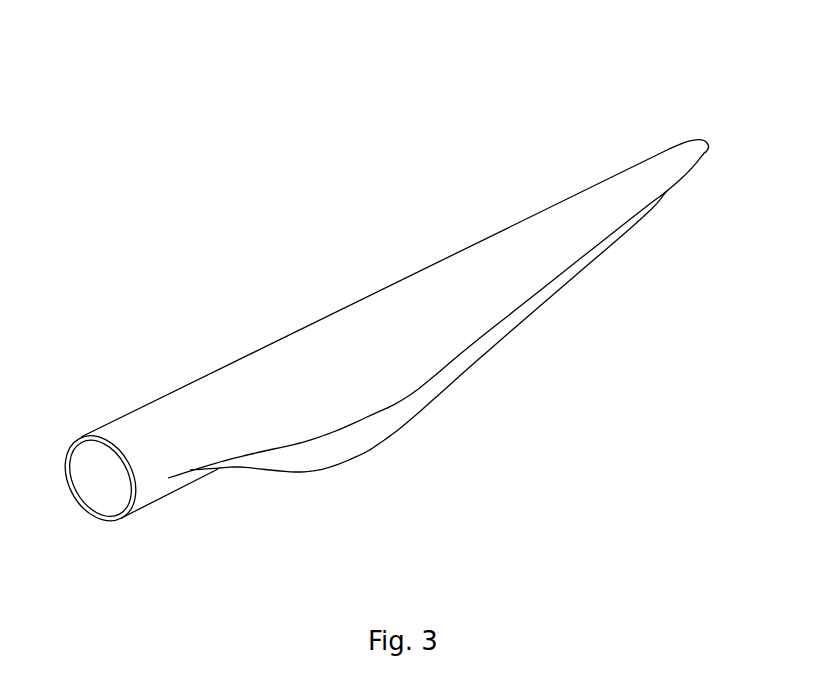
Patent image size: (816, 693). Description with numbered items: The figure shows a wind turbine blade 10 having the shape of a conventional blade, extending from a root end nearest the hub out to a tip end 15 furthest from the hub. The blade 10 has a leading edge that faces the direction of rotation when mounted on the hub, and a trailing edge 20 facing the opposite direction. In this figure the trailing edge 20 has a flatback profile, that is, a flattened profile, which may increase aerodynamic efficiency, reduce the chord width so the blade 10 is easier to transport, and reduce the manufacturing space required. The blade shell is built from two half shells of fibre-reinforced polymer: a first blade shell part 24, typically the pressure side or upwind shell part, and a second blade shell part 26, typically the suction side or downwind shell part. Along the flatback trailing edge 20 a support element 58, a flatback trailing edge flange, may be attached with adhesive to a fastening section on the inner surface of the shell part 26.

The wind turbine blade 10 is at (381, 313).
The tip end 15 is at (707, 142).
The trailing edge 20 is at (497, 338).
The first blade shell part 24 is at (462, 275).
The second blade shell part 26 is at (142, 502).
The support element 58 is at (400, 455).